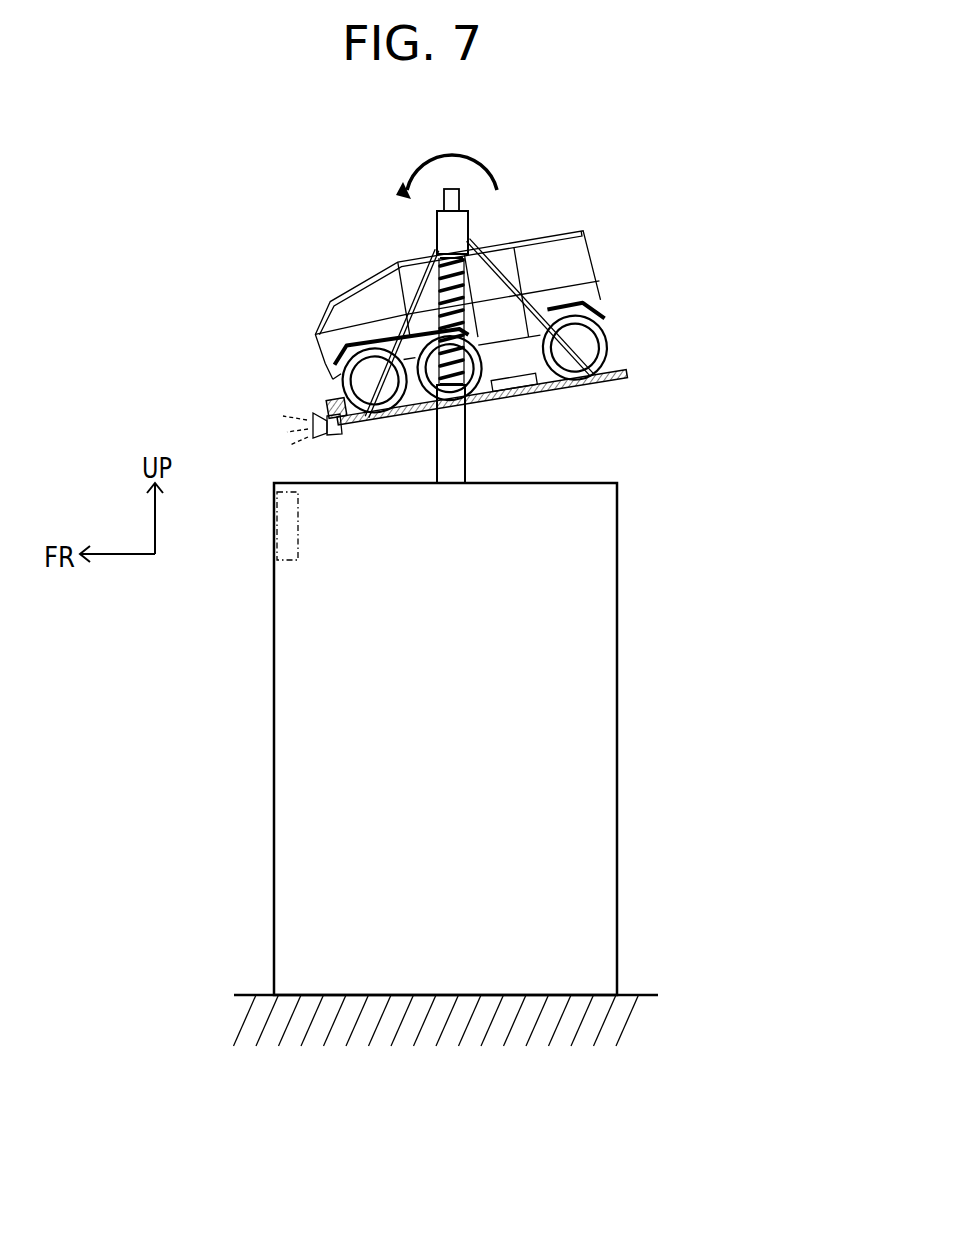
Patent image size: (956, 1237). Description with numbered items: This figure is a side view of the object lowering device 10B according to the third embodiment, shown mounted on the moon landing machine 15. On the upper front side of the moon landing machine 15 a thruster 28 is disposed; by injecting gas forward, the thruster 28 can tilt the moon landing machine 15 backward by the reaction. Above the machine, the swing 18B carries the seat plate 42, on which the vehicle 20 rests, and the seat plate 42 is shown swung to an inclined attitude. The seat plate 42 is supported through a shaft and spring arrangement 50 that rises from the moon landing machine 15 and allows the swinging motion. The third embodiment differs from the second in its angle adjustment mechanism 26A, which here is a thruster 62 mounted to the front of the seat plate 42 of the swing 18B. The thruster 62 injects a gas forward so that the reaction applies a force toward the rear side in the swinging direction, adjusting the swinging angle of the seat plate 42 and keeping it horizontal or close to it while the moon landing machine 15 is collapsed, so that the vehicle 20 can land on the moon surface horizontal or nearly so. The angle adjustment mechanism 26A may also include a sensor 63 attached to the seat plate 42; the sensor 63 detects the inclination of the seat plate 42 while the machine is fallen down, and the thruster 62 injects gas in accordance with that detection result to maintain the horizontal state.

The object lowering device 10B is at (267, 262).
The moon landing machine 15 is at (620, 707).
The swing 18B is at (503, 285).
The vehicle 20 is at (556, 228).
The angle adjustment mechanism 26A is at (306, 424).
The thruster 28 is at (285, 560).
The seat plate 42 is at (636, 368).
The support shaft unit 50 is at (570, 483).
The thruster 62 is at (340, 438).
The sensor 63 is at (505, 395).